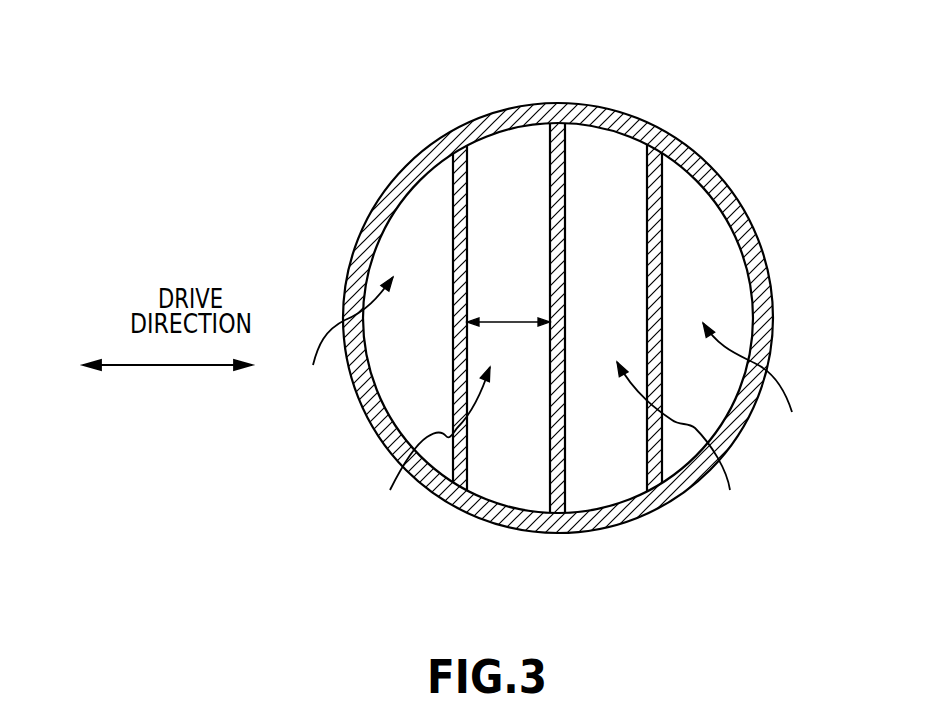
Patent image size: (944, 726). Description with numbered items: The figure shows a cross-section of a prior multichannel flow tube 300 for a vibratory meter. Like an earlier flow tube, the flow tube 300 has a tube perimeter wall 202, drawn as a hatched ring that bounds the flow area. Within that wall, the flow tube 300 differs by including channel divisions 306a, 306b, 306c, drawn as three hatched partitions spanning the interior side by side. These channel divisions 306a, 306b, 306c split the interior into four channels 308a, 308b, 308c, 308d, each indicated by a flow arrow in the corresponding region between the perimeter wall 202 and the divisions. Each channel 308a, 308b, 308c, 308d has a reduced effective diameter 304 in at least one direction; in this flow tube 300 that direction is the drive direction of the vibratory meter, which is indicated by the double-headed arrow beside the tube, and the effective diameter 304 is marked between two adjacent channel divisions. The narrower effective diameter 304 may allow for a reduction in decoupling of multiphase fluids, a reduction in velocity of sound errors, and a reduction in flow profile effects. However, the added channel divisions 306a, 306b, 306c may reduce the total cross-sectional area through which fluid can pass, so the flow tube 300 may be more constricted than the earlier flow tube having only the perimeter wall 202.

The flow tube 300 is at (318, 125).
The tube perimeter wall 202 is at (692, 165).
The effective diameter d_eff 304 is at (510, 322).
The channel division 306a is at (460, 375).
The channel division 306b is at (557, 450).
The channel division 306c is at (651, 282).
The channel 308a is at (342, 338).
The channel 308b is at (426, 446).
The channel 308c is at (687, 444).
The channel 308d is at (760, 383).